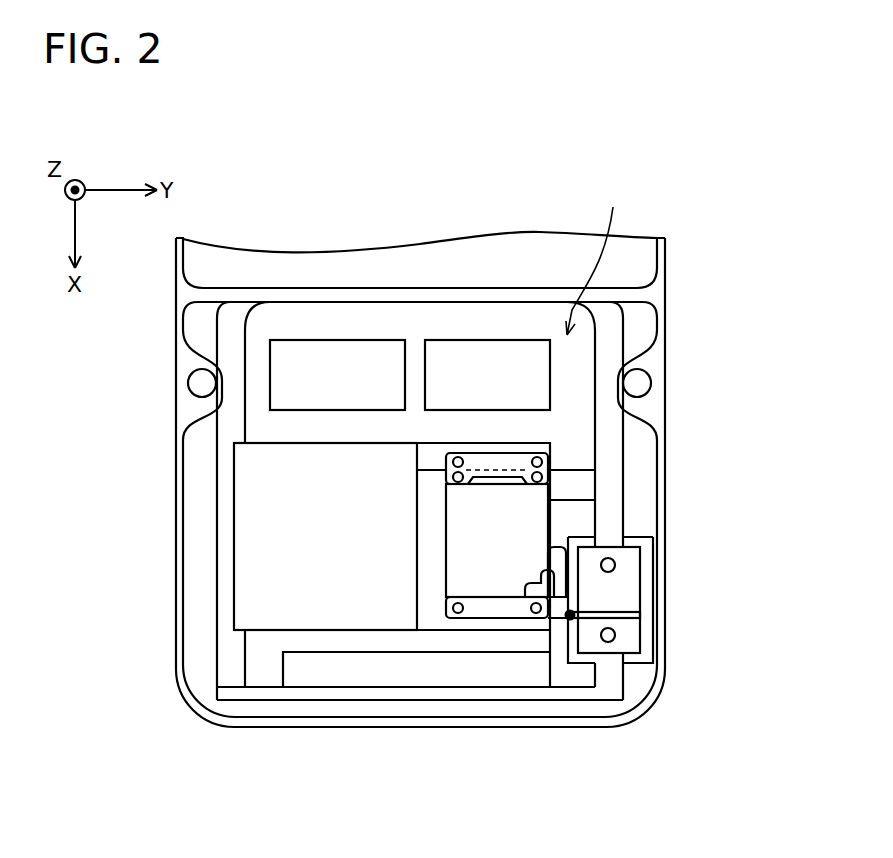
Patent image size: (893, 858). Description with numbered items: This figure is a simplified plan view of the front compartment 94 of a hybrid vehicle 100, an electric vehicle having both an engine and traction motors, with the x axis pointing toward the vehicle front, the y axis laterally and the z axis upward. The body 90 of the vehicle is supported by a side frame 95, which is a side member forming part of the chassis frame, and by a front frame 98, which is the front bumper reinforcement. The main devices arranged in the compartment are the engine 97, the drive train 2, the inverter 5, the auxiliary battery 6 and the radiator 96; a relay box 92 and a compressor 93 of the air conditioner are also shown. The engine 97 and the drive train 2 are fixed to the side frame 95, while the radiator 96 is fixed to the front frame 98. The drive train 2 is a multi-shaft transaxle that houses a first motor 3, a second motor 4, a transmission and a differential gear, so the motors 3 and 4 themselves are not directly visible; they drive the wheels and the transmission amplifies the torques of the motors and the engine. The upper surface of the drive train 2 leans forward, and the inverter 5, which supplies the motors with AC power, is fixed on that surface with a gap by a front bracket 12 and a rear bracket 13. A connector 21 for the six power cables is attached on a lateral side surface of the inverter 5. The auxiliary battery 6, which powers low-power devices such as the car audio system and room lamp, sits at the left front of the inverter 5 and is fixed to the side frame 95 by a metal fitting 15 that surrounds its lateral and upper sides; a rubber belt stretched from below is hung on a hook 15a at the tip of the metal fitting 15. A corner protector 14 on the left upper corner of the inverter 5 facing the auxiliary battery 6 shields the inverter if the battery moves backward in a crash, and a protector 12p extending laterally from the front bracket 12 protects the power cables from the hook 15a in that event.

The hybrid vehicle 100 is at (731, 157).
The body 90 is at (657, 360).
The side frame 95 is at (617, 437).
The relay box 92 is at (337, 353).
The compressor 93 is at (492, 352).
The front compartment 94 is at (596, 260).
The engine 97 is at (297, 532).
The drive train 2 is at (333, 565).
The first motor 3 is at (506, 565).
The second motor 4 is at (432, 573).
The inverter 5 is at (528, 518).
The rear bracket 13 is at (507, 465).
The front bracket 12 is at (493, 607).
The protector 12p is at (568, 622).
The connector 21 is at (560, 580).
The corner protector 14 is at (547, 598).
The auxiliary battery 6 is at (630, 595).
The metal fitting 15 is at (640, 615).
The hook 15a is at (572, 620).
The radiator 96 is at (348, 675).
The front frame 98 is at (265, 693).